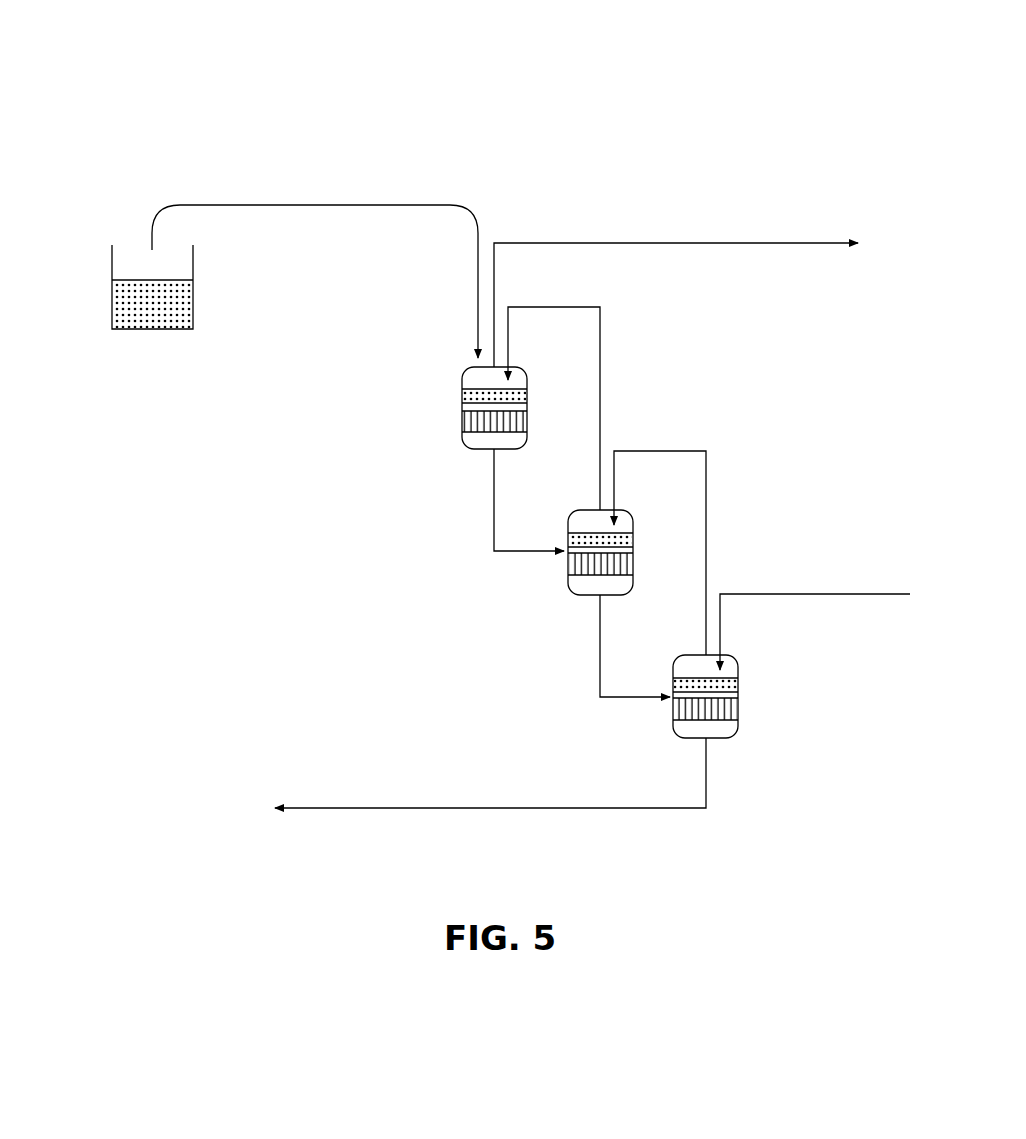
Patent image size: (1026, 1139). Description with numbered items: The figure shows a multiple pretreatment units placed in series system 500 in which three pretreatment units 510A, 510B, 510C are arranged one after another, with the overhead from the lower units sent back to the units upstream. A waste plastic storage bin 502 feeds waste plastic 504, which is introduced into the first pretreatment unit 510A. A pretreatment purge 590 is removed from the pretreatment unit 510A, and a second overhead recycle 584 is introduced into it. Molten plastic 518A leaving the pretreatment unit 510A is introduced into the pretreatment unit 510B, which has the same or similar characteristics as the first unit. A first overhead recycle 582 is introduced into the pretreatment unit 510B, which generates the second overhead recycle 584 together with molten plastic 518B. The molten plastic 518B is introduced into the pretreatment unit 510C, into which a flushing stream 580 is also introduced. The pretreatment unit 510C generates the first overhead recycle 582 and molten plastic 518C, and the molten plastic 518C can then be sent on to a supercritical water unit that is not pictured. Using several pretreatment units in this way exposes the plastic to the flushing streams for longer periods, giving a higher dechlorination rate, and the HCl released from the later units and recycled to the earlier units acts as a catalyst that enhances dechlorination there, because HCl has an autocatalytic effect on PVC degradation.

The multiple pretreatment units placed in series system 500 is at (190, 78).
The waste plastic storage bin 502 is at (112, 268).
The waste plastic 504 is at (306, 205).
The pretreatment unit 510A is at (462, 400).
The pretreatment unit 510B is at (568, 568).
The pretreatment unit 510C is at (673, 718).
The molten plastic 518A is at (494, 498).
The molten plastic 518B is at (600, 641).
The molten plastic 518C is at (412, 808).
The flushing stream 580 is at (820, 594).
The first overhead recycle 582 is at (706, 483).
The second overhead recycle 584 is at (600, 333).
The pretreatment purge 590 is at (661, 243).